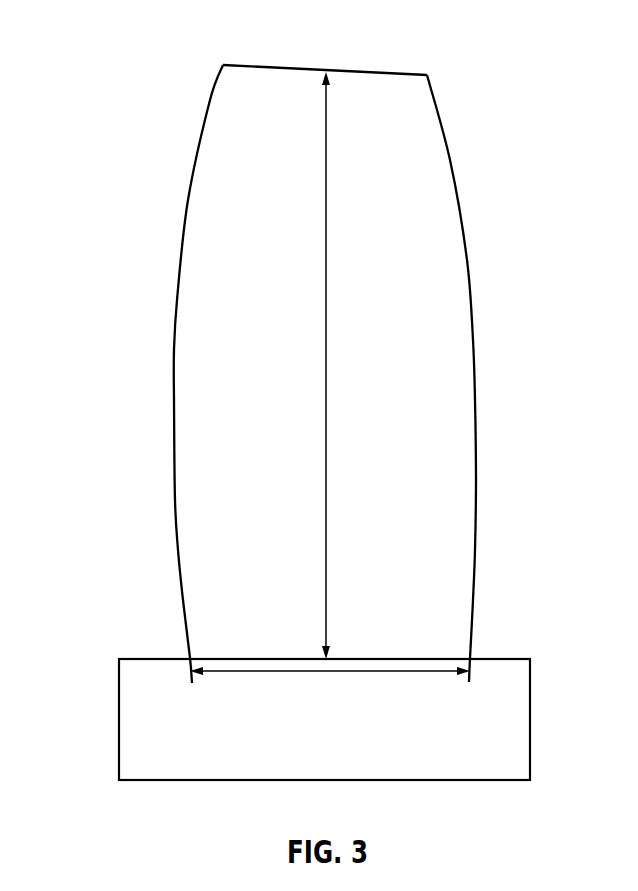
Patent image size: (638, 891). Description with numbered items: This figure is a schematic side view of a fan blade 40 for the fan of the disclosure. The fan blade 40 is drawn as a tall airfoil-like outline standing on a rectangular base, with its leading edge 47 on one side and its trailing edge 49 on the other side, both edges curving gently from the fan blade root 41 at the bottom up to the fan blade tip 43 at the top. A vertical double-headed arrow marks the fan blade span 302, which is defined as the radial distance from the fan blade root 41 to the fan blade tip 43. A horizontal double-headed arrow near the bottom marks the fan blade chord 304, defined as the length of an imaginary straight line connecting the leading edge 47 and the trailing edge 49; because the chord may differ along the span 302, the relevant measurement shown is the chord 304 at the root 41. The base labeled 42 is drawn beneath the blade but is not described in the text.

The fan blade 40 is at (143, 40).
The fan blade tip 43 is at (384, 72).
The fan blade leading edge 47 is at (174, 350).
The fan blade trailing edge 49 is at (473, 340).
The platform base 42 is at (119, 720).
The fan blade root 41 is at (432, 658).
The fan blade span 302 is at (326, 414).
The fan blade chord 304 is at (330, 674).